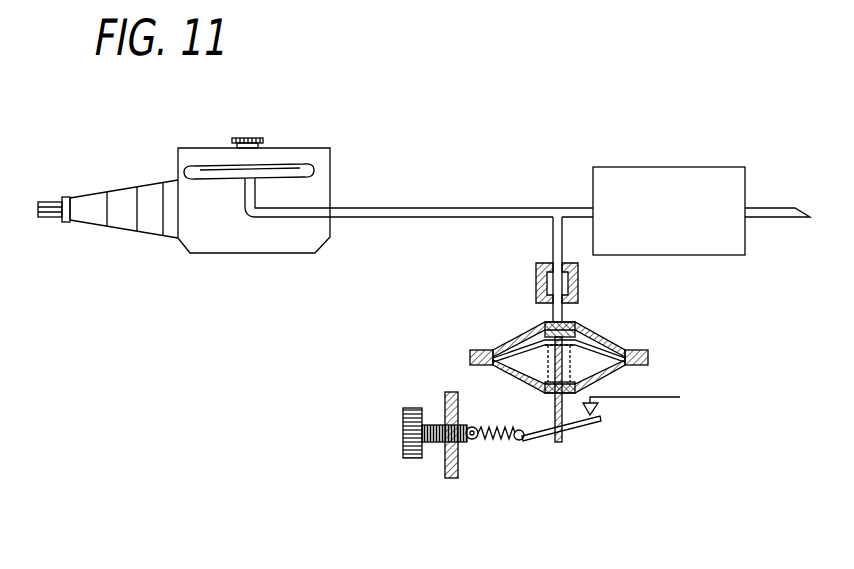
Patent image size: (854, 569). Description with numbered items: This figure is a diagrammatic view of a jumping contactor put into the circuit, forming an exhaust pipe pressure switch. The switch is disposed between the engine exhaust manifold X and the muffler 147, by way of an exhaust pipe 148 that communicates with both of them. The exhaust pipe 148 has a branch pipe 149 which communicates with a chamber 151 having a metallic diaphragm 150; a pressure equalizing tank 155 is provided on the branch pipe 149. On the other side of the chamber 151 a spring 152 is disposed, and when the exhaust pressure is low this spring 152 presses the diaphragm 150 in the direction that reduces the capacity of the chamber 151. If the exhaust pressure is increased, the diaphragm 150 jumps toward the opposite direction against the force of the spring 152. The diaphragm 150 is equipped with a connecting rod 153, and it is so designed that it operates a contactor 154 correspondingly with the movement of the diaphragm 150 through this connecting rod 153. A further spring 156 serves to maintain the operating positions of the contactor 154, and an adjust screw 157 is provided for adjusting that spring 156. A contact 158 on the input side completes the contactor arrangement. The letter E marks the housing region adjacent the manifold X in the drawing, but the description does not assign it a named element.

The torch E is at (201, 195).
The engine exhaust manifold X is at (250, 135).
The muffler 147 is at (701, 190).
The exhaust pipe 148 is at (419, 192).
The branch pipe 149 is at (529, 269).
The metallic diaphragm 150 is at (547, 335).
The chamber 151 is at (574, 348).
The spring 152 is at (584, 362).
The connecting rod 153 is at (531, 389).
The contactor 154 is at (574, 444).
The pressure equalizing tank 155 is at (534, 281).
The spring 156 is at (509, 455).
The adjust screw 157 is at (440, 458).
The contact 158 is at (631, 418).